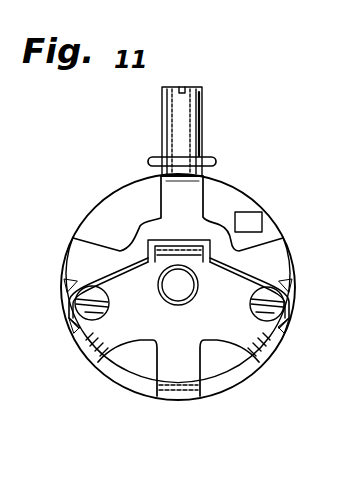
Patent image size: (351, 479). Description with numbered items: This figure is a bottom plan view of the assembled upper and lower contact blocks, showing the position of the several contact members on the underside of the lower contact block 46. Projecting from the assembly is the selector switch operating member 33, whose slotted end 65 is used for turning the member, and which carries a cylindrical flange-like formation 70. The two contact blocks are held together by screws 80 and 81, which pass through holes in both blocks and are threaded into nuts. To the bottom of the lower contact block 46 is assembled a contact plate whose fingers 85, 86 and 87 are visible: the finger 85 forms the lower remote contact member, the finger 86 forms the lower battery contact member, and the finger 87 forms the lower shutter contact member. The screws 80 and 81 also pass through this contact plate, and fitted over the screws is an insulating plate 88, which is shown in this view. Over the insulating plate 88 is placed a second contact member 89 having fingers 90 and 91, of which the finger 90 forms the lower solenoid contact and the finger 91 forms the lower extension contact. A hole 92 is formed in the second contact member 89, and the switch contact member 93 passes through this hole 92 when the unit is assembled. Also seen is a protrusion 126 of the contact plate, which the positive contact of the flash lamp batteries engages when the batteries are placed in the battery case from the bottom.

The selector switch operating member 33 is at (196, 123).
The slotted end 65 is at (184, 91).
The cylindrical flange-like formation 70 is at (149, 161).
The second contact member 89 is at (221, 203).
The lower contact block 46 is at (243, 212).
The finger 90 is at (78, 265).
The finger 91 is at (268, 261).
The hole 92 is at (162, 244).
The switch contact member 93 is at (193, 256).
The protrusion 126 is at (171, 293).
The screw 80 is at (284, 306).
The screw 81 is at (88, 309).
The finger 85 is at (105, 343).
The finger 86 is at (181, 380).
The finger 87 is at (273, 345).
The insulating plate 88 is at (228, 368).